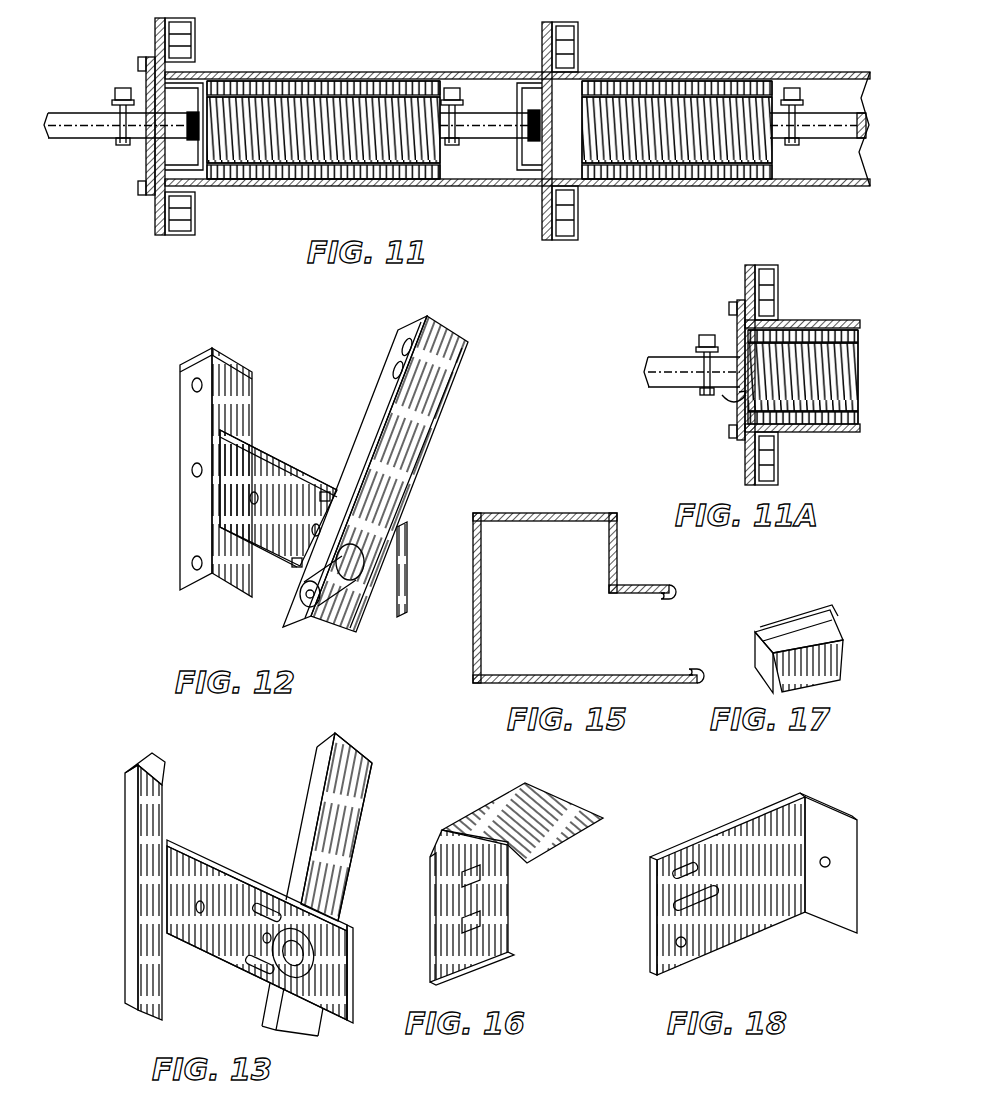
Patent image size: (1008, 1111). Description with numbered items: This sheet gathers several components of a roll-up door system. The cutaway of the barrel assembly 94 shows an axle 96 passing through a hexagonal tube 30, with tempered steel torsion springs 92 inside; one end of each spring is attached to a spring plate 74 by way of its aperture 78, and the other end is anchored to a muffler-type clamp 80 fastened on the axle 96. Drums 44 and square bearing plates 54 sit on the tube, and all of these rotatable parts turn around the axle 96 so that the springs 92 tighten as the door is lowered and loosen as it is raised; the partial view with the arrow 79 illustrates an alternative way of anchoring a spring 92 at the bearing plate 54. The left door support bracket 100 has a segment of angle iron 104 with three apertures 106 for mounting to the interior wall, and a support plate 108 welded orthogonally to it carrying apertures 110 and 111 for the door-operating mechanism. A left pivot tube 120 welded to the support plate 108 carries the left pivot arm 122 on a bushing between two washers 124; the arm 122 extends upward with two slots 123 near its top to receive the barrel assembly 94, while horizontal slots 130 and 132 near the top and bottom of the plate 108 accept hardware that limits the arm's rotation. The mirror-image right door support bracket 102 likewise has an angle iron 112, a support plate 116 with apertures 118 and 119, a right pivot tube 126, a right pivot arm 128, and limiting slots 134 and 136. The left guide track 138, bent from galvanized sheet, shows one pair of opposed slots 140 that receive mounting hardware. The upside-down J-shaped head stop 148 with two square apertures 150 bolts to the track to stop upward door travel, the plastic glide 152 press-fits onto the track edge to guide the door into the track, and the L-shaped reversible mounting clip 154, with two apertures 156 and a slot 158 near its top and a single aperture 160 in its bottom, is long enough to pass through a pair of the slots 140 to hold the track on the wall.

In FIG. 11, the hexagonal tube 30 is at (420, 180).
In FIG. 11, the drum 44 is at (156, 208).
In FIG. 11A, the drum 44 is at (755, 266).
In FIG. 11, the square bearing plate 54 is at (150, 160).
In FIG. 11A, the square bearing plate 54 is at (738, 316).
In FIG. 11, the spring plate 74 is at (210, 80).
In FIG. 11, the aperture 78 is at (224, 179).
In FIG. 11A, the rotation arrow 79 is at (730, 412).
In FIG. 11, the clamp 80 is at (116, 104).
In FIG. 11A, the clamp 80 is at (702, 340).
In FIG. 11, the spring 92 is at (292, 170).
In FIG. 11A, the spring 92 is at (802, 322).
In FIG. 11, the barrel assembly 94 is at (119, 210).
In FIG. 11, the axle 96 is at (75, 138).
In FIG. 11A, the axle 96 is at (678, 387).
In FIG. 12, the left door support bracket 100 is at (296, 487).
In FIG. 13, the right door support bracket 102 is at (234, 891).
In FIG. 12, the segment of angle iron 104 is at (188, 472).
In FIG. 12, the apertures 106 is at (191, 383).
In FIG. 12, the support plate 108 is at (278, 495).
In FIG. 12, the aperture 110 is at (254, 504).
In FIG. 12, the aperture 111 is at (312, 530).
In FIG. 13, the segment of angle iron 112 is at (130, 820).
In FIG. 13, the support plate 116 is at (279, 933).
In FIG. 13, the aperture 118 is at (199, 913).
In FIG. 13, the aperture 119 is at (262, 938).
In FIG. 12, the left pivot tube 120 is at (306, 610).
In FIG. 12, the left pivot arm 122 is at (375, 474).
In FIG. 12, the slots 123 is at (392, 380).
In FIG. 12, the washers 124 is at (360, 616).
In FIG. 13, the right pivot tube 126 is at (300, 976).
In FIG. 13, the right pivot arm 128 is at (320, 812).
In FIG. 12, the slot 130 is at (327, 491).
In FIG. 12, the slot 132 is at (277, 581).
In FIG. 13, the slot 134 is at (266, 902).
In FIG. 13, the slot 136 is at (260, 972).
In FIG. 15, the left guide track 138 is at (572, 614).
In FIG. 15, the slots 140 is at (482, 522).
In FIG. 16, the head stop 148 is at (516, 884).
In FIG. 16, the square apertures 150 is at (556, 934).
In FIG. 17, the plastic glide 152 is at (790, 596).
In FIG. 18, the reversible mounting clip 154 is at (727, 889).
In FIG. 18, the apertures 156 is at (694, 870).
In FIG. 18, the slot 158 is at (670, 902).
In FIG. 18, the aperture 160 is at (819, 866).